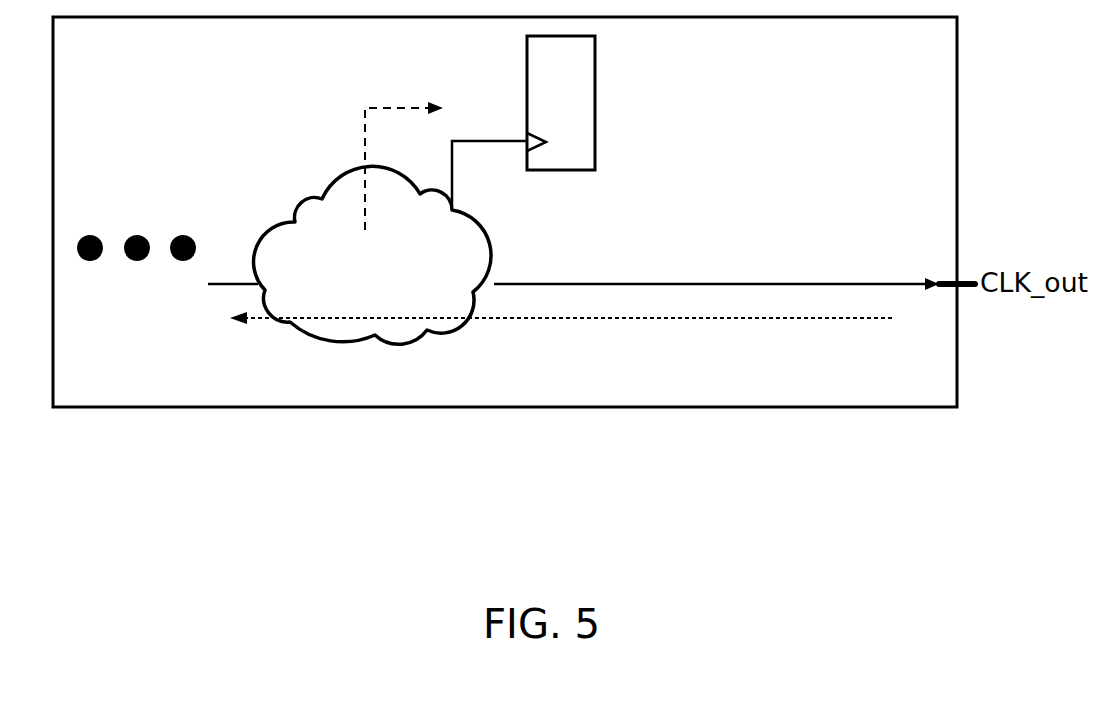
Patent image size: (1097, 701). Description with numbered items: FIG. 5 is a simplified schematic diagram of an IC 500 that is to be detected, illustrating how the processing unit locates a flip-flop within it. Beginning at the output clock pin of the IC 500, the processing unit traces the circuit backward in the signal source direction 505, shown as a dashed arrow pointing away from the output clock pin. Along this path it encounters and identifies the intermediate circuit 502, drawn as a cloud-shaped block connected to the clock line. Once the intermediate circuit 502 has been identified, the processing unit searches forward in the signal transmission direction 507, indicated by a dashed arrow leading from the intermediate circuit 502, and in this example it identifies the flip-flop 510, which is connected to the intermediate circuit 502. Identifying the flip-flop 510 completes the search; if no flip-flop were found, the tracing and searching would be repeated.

The IC 500 is at (110, 63).
The intermediate circuit 502 is at (497, 258).
The signal source direction 505 is at (563, 321).
The signal transmission direction 507 is at (390, 107).
The flip-flop 510 is at (595, 100).